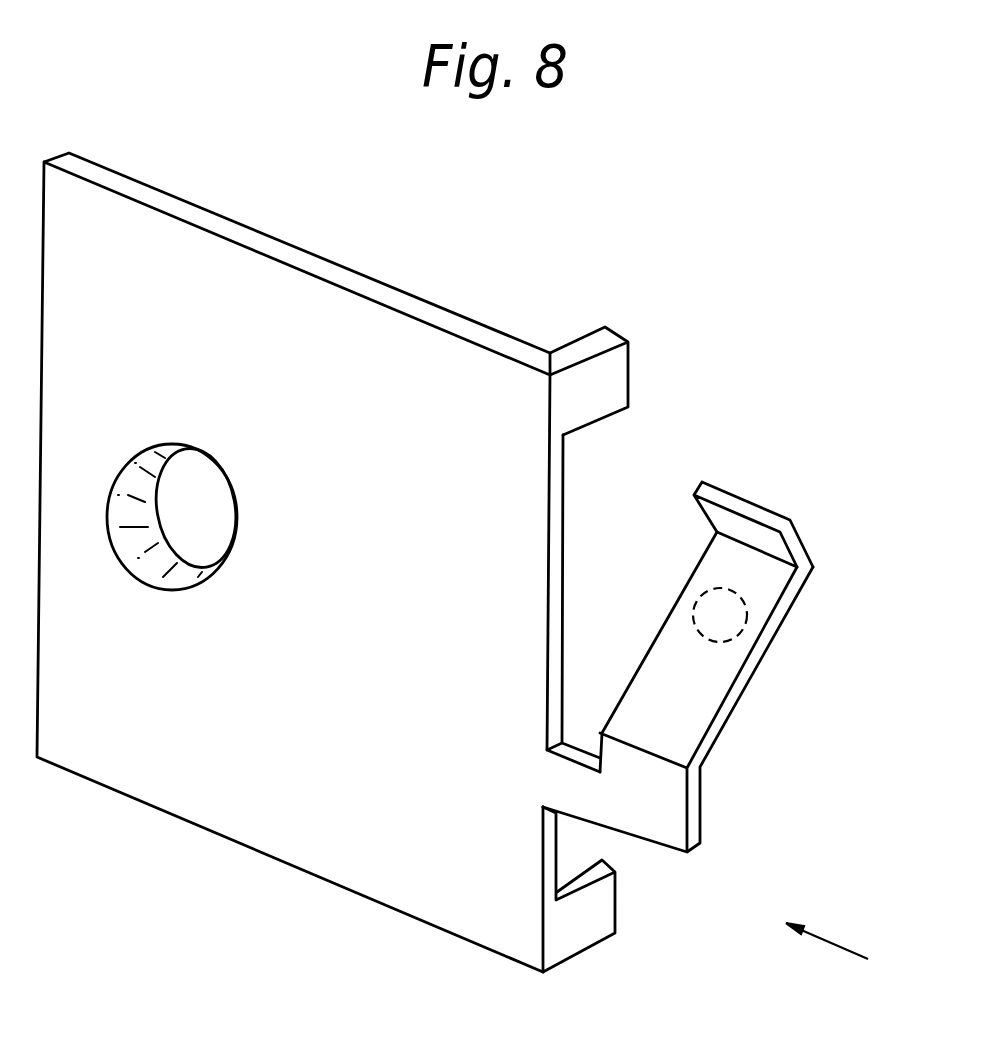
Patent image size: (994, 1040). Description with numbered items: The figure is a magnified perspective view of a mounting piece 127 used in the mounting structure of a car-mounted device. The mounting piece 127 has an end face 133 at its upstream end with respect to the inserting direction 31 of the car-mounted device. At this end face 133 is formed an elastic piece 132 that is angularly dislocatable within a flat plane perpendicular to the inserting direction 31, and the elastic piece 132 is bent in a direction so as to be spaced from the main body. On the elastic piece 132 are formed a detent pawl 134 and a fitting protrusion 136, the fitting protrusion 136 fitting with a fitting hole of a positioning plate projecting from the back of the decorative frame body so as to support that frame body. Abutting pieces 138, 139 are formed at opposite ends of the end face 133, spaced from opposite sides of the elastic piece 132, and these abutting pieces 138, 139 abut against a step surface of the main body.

The mounting piece 127 is at (362, 863).
The end face 133 is at (553, 520).
The abutting piece 138 is at (612, 386).
The abutting piece 139 is at (588, 928).
The elastic piece 132 is at (733, 690).
The detent pawl 134 is at (795, 548).
The fitting protrusion 136 is at (730, 622).
The inserting direction 31 is at (823, 942).